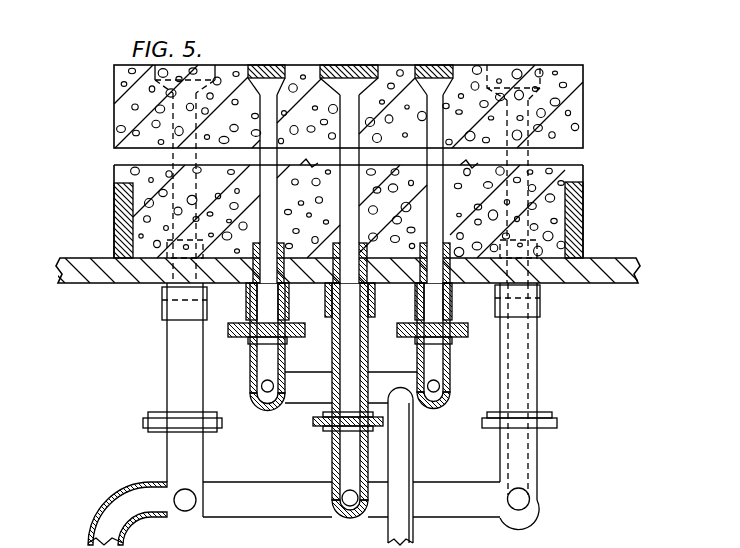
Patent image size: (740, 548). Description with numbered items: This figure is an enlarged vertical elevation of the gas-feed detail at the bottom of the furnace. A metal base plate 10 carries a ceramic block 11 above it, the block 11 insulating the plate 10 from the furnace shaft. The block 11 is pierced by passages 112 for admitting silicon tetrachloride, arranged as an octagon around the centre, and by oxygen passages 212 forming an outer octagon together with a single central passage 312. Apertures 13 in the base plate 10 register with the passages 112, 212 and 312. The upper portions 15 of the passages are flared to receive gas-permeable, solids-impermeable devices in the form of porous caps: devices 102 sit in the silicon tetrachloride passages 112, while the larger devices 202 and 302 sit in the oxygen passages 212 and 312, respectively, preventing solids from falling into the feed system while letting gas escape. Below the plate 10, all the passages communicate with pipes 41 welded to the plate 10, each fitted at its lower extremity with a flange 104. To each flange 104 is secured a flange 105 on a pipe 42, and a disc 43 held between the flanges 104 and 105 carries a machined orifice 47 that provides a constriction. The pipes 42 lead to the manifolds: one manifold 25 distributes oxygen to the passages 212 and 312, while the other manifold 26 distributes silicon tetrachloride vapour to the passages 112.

The upper portions of the passages 15 is at (538, 85).
The passages for admission of silicon tetrachloride 112 is at (437, 122).
The central passage for admission of oxygen 312 is at (350, 173).
The ceramic block 11 is at (568, 174).
The passages for admission of oxygen 212 is at (572, 222).
The metal base plate 10 is at (340, 292).
The apertures 13 is at (539, 267).
The gas-permeable solids-impermeable device 302 is at (366, 40).
The gas-permeable solids-impermeable device 102 is at (452, 40).
The gas-permeable solids-impermeable device 202 is at (502, 65).
The pipes 41 is at (485, 306).
The machined orifice 47 is at (246, 238).
The disc 43 is at (335, 397).
The flange 104 is at (313, 418).
The flange 105 is at (317, 431).
The pipe 42 is at (502, 450).
The manifold 26 is at (406, 461).
The manifold 25 is at (478, 508).